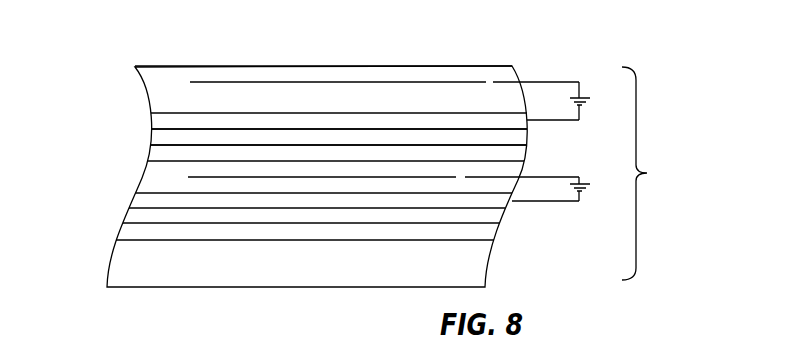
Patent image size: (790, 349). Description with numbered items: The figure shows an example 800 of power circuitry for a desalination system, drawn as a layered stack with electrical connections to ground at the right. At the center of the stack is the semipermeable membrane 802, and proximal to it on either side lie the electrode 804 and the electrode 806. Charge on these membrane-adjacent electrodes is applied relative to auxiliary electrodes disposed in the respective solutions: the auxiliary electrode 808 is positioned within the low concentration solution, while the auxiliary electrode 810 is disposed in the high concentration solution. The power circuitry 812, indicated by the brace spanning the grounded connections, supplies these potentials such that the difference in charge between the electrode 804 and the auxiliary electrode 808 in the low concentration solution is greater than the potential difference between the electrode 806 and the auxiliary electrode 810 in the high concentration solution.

The example of the power circuitry 800 is at (244, 43).
The semipermeable membrane 802 is at (157, 141).
The electrode 804 is at (152, 202).
The electrode 806 is at (165, 120).
The auxiliary electrode 808 is at (285, 177).
The auxiliary electrode 810 is at (386, 82).
The power circuitry 812 is at (642, 173).